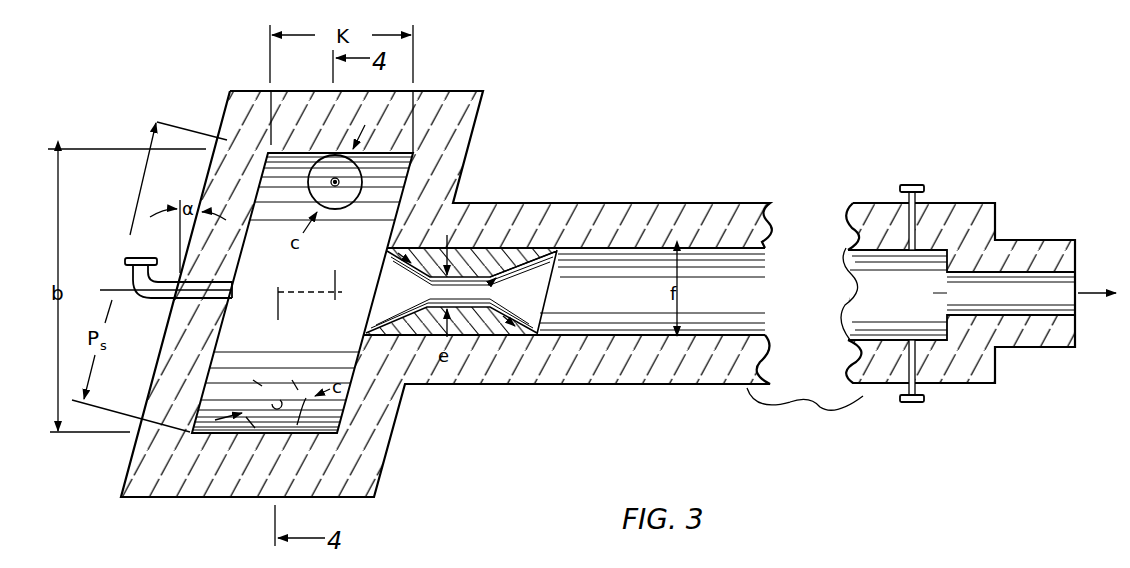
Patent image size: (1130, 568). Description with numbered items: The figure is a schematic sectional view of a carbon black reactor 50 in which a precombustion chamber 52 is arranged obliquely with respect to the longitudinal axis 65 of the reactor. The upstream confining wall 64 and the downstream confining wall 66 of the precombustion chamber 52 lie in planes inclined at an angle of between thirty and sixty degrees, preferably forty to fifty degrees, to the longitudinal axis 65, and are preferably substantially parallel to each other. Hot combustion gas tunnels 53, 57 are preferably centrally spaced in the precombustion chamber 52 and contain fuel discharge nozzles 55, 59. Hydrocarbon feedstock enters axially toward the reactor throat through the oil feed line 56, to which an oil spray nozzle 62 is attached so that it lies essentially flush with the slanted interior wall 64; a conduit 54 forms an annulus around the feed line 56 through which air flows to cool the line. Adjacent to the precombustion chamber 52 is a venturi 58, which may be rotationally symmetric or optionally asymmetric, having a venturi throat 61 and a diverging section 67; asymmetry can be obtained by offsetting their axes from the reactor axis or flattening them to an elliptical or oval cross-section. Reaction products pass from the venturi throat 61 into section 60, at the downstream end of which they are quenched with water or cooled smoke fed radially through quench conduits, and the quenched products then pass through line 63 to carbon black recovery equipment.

The reactor 50 is at (650, 168).
The precombustion chamber 52 is at (327, 289).
The hot combustion gas tunnel 53 is at (335, 211).
The conduit 54 is at (124, 270).
The fuel discharge nozzle 55 is at (341, 184).
The oil feed line 56 is at (120, 291).
The hot combustion gas tunnel 57 is at (257, 384).
The venturi 58 is at (384, 296).
The fuel discharge nozzle 59 is at (279, 398).
The section 60 is at (737, 262).
The venturi throat 61 is at (480, 292).
The oil spray nozzle 62 is at (925, 192).
The line 63 is at (995, 276).
The upstream confining wall 64 is at (923, 394).
The longitudinal axis 65 is at (1085, 291).
The downstream confining wall 66 is at (402, 195).
The diverging section 67 is at (543, 268).